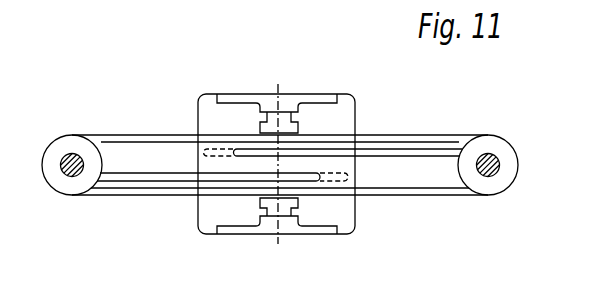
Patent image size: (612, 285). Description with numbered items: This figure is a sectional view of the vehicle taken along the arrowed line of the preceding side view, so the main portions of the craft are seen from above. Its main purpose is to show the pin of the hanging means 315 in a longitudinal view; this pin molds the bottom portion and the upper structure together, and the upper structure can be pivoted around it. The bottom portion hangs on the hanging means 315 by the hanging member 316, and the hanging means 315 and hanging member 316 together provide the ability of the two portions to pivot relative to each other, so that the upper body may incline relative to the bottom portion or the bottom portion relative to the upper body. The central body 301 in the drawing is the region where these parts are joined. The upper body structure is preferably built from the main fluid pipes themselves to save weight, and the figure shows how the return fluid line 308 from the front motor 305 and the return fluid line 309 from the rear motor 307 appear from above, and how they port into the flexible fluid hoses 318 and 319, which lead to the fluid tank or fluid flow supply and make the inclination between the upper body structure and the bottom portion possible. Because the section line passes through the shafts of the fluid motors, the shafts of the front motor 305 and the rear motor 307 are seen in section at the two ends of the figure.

The clamp block 301 is at (348, 227).
The front motor 305 is at (64, 184).
The rear motor 307 is at (503, 173).
The return fluid line 308 is at (113, 175).
The return fluid line 309 is at (393, 155).
The hanging means 315 is at (287, 117).
The hanging member 316 is at (242, 100).
The flexible fluid hose 318 is at (207, 148).
The flexible fluid hose 319 is at (347, 185).